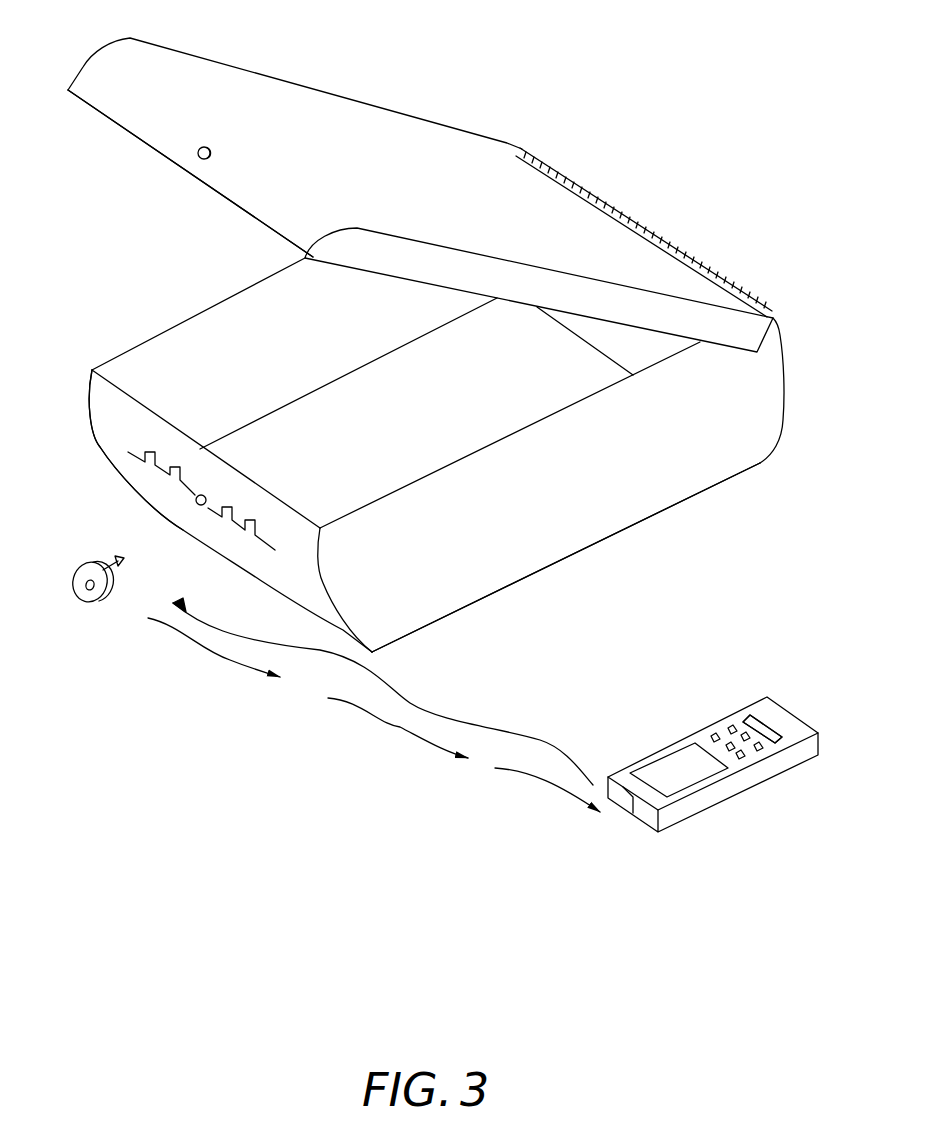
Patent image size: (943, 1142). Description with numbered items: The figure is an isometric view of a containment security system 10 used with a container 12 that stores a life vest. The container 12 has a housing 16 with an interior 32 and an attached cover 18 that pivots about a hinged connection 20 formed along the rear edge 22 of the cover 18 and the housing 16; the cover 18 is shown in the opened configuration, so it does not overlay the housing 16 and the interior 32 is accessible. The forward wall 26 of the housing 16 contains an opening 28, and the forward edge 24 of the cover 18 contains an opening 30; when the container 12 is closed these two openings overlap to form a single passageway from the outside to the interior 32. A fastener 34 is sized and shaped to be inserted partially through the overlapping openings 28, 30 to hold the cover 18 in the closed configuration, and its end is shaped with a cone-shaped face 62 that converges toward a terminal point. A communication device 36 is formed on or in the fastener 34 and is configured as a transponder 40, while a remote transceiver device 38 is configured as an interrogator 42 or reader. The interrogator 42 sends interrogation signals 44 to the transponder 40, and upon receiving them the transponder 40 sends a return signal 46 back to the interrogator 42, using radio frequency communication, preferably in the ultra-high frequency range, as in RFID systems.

The containment security system 10 is at (588, 112).
The container 12 is at (786, 305).
The housing 16 is at (686, 472).
The cover 18 is at (397, 146).
The hinged connection 20 is at (690, 258).
The rear edge 22 is at (633, 231).
The forward edge 24 is at (135, 100).
The forward wall 26 is at (118, 428).
The opening 28 is at (196, 500).
The opening 30 is at (196, 153).
The interior 32 is at (266, 372).
The fastener 34 is at (106, 606).
The communication device 36 is at (80, 569).
The transceiver device 38 is at (753, 692).
The transponder 40 is at (89, 588).
The interrogator 42 is at (778, 720).
The interrogation signals 44 is at (486, 730).
The return signal 46 is at (425, 750).
The cone-shaped face 62 is at (120, 560).